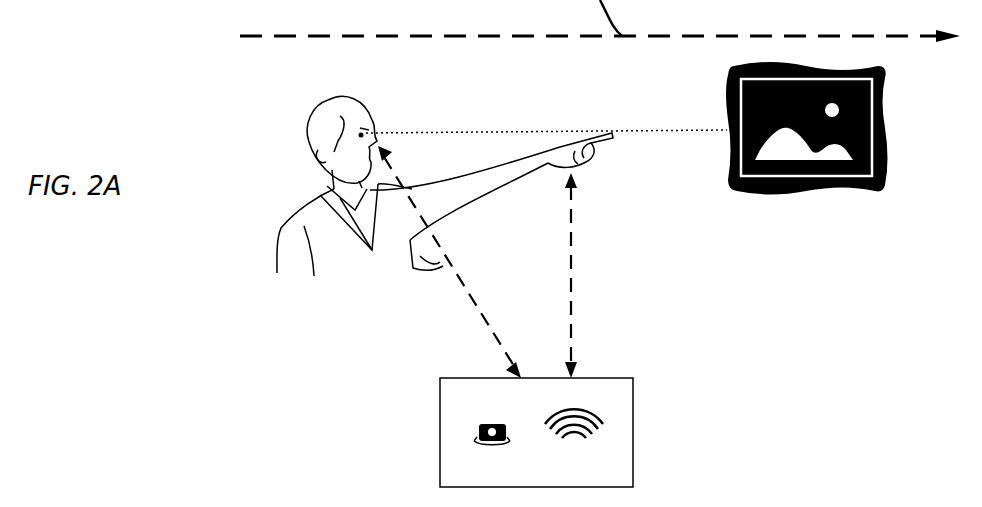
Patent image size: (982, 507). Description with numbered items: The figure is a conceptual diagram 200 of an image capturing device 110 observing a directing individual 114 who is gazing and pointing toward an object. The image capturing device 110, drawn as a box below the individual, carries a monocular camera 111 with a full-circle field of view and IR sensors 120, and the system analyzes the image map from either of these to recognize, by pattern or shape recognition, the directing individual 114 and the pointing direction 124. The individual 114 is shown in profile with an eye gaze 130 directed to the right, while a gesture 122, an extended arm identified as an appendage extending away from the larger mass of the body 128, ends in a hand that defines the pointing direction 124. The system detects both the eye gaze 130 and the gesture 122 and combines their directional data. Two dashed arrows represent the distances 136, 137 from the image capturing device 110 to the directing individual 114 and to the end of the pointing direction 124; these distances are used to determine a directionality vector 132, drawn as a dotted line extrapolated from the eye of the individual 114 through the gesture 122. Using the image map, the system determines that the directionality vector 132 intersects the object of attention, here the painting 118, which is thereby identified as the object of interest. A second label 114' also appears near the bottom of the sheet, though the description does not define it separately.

The conceptual diagram 200 is at (210, 103).
The directing individual 114 is at (456, 163).
The user (second position) 114' is at (277, 494).
The eye gaze 130 is at (364, 135).
The directionality vector 132 is at (683, 130).
The body 128 is at (328, 237).
The gesture 122 is at (472, 190).
The pointing direction 124 is at (612, 140).
The painting 118 is at (863, 193).
The image capturing device 110 is at (440, 477).
The 360-degree monocular camera 111 is at (483, 415).
The IR sensors 120 is at (605, 425).
The distance 136 is at (458, 282).
The distance 137 is at (607, 295).